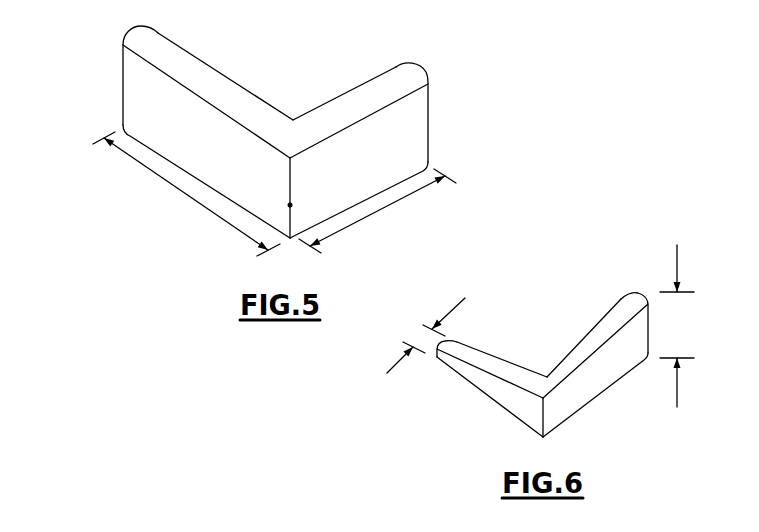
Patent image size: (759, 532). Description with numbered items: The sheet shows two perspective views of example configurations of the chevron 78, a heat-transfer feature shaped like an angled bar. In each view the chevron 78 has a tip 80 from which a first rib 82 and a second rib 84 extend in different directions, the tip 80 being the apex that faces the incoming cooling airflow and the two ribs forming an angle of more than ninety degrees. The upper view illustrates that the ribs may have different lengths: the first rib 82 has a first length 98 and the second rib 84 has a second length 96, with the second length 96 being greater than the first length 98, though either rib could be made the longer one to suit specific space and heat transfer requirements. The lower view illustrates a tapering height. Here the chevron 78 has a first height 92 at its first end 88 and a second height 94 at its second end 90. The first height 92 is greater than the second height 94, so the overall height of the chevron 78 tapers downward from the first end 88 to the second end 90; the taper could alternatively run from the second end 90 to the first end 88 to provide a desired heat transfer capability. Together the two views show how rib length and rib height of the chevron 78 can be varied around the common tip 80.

In FIG. 5, the chevron 78 is at (282, 177).
In FIG. 6, the chevron 78 is at (518, 364).
In FIG. 5, the tip 80 is at (290, 205).
In FIG. 5, the first rib 82 is at (370, 134).
In FIG. 6, the first rib 82 is at (602, 370).
In FIG. 5, the second rib 84 is at (203, 128).
In FIG. 6, the second rib 84 is at (490, 387).
In FIG. 5, the first end 88 is at (430, 105).
In FIG. 6, the first end 88 is at (650, 299).
In FIG. 5, the second end 90 is at (122, 82).
In FIG. 6, the second end 90 is at (433, 356).
In FIG. 6, the first height 92 is at (677, 262).
In FIG. 6, the second height 94 is at (462, 304).
In FIG. 5, the second length 96 is at (183, 197).
In FIG. 5, the first length 98 is at (352, 224).